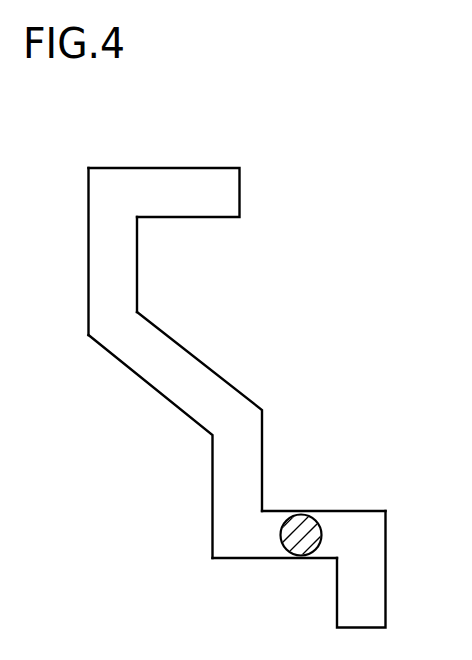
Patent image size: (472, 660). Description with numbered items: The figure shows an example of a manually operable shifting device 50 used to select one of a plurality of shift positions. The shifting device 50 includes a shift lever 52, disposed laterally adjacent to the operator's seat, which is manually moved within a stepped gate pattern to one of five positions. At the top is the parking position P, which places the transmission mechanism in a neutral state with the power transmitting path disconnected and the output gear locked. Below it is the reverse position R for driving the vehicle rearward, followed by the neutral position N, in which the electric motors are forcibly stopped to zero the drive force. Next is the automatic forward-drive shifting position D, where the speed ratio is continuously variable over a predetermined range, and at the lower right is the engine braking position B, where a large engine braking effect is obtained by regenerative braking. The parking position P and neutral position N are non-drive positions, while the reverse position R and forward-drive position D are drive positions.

The shifting device 50 is at (265, 358).
The shift lever 52 is at (310, 527).
The parking position P is at (164, 192).
The reverse position R is at (113, 251).
The neutral position N is at (176, 435).
The automatic forward-drive shifting position D is at (299, 534).
The engine braking position B is at (361, 569).